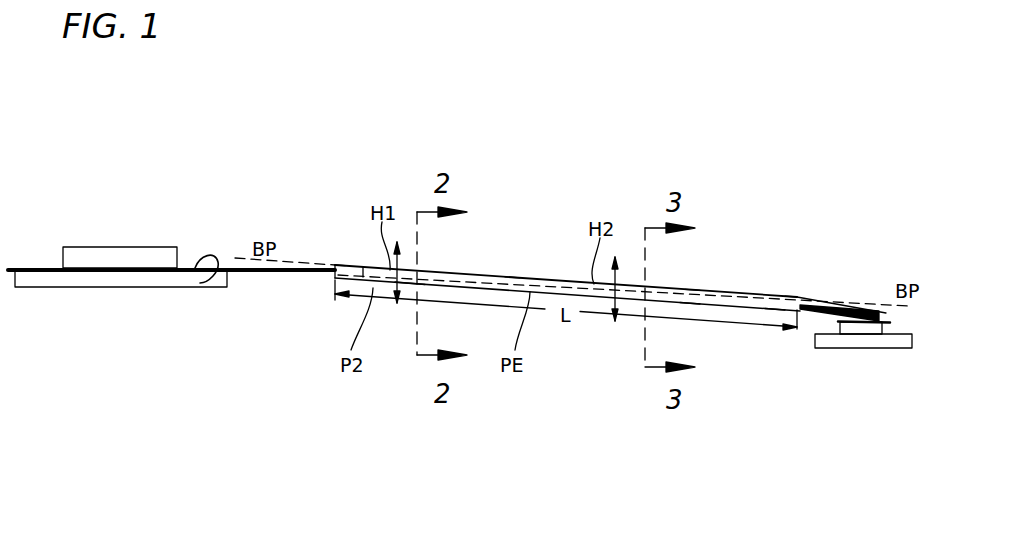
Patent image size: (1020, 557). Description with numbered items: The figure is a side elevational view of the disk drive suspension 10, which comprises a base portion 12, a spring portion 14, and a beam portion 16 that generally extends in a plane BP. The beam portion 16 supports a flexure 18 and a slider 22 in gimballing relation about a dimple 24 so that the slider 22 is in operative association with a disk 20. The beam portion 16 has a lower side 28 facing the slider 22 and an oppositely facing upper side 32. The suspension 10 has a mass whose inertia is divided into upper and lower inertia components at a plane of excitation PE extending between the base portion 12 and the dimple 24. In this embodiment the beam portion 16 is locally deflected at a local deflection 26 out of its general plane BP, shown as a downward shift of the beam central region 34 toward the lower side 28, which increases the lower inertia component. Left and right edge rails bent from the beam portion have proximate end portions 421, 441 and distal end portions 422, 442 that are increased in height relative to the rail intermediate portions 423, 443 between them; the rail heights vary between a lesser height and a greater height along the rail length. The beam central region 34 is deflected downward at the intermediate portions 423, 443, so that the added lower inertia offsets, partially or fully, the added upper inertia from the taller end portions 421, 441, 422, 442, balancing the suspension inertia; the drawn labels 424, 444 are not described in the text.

The disk drive suspension 10 is at (37, 248).
The base portion 12 is at (195, 268).
The spring portion 14 is at (262, 273).
The beam portion 16 is at (731, 290).
The flexure 18 is at (834, 302).
The disk 20 is at (822, 345).
The slider 22 is at (866, 326).
The dimple 24 is at (868, 313).
The local deflection 26 is at (689, 311).
The lower side 28 is at (775, 316).
The upper side 32 is at (362, 277).
The beam central region 34 is at (412, 286).
The left edge rail proximate end portion 421 is at (284, 209).
The right edge rail proximate end portion 441 is at (340, 267).
The left edge rail distal end portion 422 is at (825, 250).
The right edge rail distal end portion 442 is at (795, 297).
The left edge rail intermediate portion 423 is at (555, 219).
The right edge rail intermediate portion 443 is at (513, 277).
The fourth electrode edge 424 is at (743, 221).
The fourth electrode edge 444 is at (692, 290).